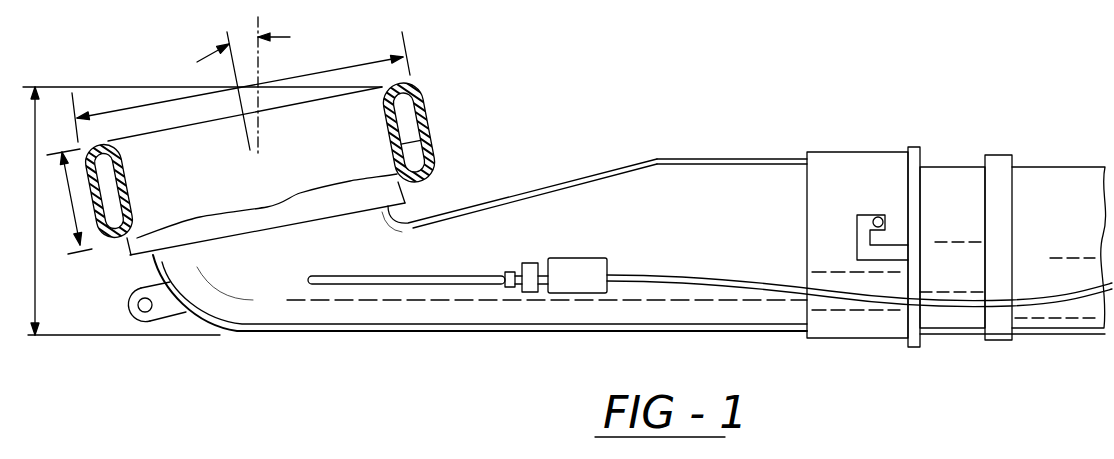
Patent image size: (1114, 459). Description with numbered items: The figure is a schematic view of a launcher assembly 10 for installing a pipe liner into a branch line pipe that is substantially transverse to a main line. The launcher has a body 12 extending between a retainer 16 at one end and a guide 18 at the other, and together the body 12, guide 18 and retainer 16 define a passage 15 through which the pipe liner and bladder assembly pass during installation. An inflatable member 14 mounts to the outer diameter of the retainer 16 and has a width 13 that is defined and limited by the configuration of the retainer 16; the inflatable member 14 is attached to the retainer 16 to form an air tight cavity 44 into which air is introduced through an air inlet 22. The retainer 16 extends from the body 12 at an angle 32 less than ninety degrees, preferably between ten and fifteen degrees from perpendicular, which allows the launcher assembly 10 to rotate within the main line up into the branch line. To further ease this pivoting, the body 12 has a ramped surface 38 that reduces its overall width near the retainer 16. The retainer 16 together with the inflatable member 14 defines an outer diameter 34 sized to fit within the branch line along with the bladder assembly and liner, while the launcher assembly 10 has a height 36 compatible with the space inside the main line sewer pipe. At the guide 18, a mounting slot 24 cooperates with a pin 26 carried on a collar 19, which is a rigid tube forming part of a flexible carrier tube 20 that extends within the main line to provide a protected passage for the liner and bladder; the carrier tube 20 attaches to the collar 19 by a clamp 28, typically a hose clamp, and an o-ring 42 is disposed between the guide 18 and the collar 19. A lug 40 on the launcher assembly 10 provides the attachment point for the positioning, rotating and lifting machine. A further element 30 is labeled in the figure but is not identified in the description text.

The launcher assembly 10 is at (656, 134).
The body 12 is at (593, 197).
The width 13 is at (72, 205).
The inflatable member 14 is at (418, 120).
The passage 15 is at (727, 249).
The retainer 16 is at (410, 143).
The guide 18 is at (738, 177).
The collar 19 is at (943, 180).
The carrier tube 20 is at (1035, 177).
The air inlet 22 is at (448, 283).
The mounting slot 24 is at (872, 258).
The pin 26 is at (878, 217).
The clamp 28 is at (1000, 208).
The cable 30 is at (655, 283).
The angle 32 is at (290, 37).
The outer diameter 34 is at (155, 107).
The height 36 is at (38, 133).
The ramped surface 38 is at (510, 193).
The lug 40 is at (152, 317).
The o-ring 42 is at (922, 335).
The cavity 44 is at (393, 125).